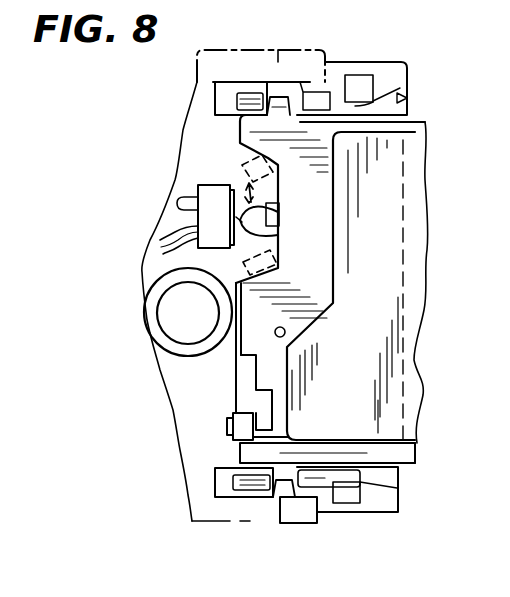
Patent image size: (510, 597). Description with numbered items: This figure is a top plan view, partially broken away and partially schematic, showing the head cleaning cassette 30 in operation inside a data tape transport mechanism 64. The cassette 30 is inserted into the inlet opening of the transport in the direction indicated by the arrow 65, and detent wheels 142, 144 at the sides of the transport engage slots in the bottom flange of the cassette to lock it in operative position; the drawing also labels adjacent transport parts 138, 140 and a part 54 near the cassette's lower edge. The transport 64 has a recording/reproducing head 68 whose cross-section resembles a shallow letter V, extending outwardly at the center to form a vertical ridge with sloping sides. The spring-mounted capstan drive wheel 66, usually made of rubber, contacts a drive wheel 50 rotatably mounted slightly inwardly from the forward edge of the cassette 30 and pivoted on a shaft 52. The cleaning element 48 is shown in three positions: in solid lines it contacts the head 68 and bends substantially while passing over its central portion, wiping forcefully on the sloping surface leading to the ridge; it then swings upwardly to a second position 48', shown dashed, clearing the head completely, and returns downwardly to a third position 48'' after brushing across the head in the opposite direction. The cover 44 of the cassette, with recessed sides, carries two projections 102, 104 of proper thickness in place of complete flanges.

The cleaning cassette 30 is at (425, 160).
The cover 44 is at (386, 239).
The cleaning element 48 is at (275, 228).
The second position of cleaning element 48' is at (281, 178).
The third position of cleaning element 48'' is at (284, 268).
The drive wheel 50 is at (235, 346).
The shaft 52 is at (320, 335).
The catch 54 is at (232, 421).
The tape transport mechanism 64 is at (323, 47).
The arrow 65 is at (418, 453).
The capstan drive wheel 66 is at (150, 337).
The recording/reproducing head 68 is at (237, 188).
The projection 102 is at (277, 100).
The projection 104 is at (278, 493).
The upper housing block 138 is at (407, 99).
The lower housing block 140 is at (398, 488).
The detent wheel 142 is at (213, 82).
The detent wheel 144 is at (215, 482).